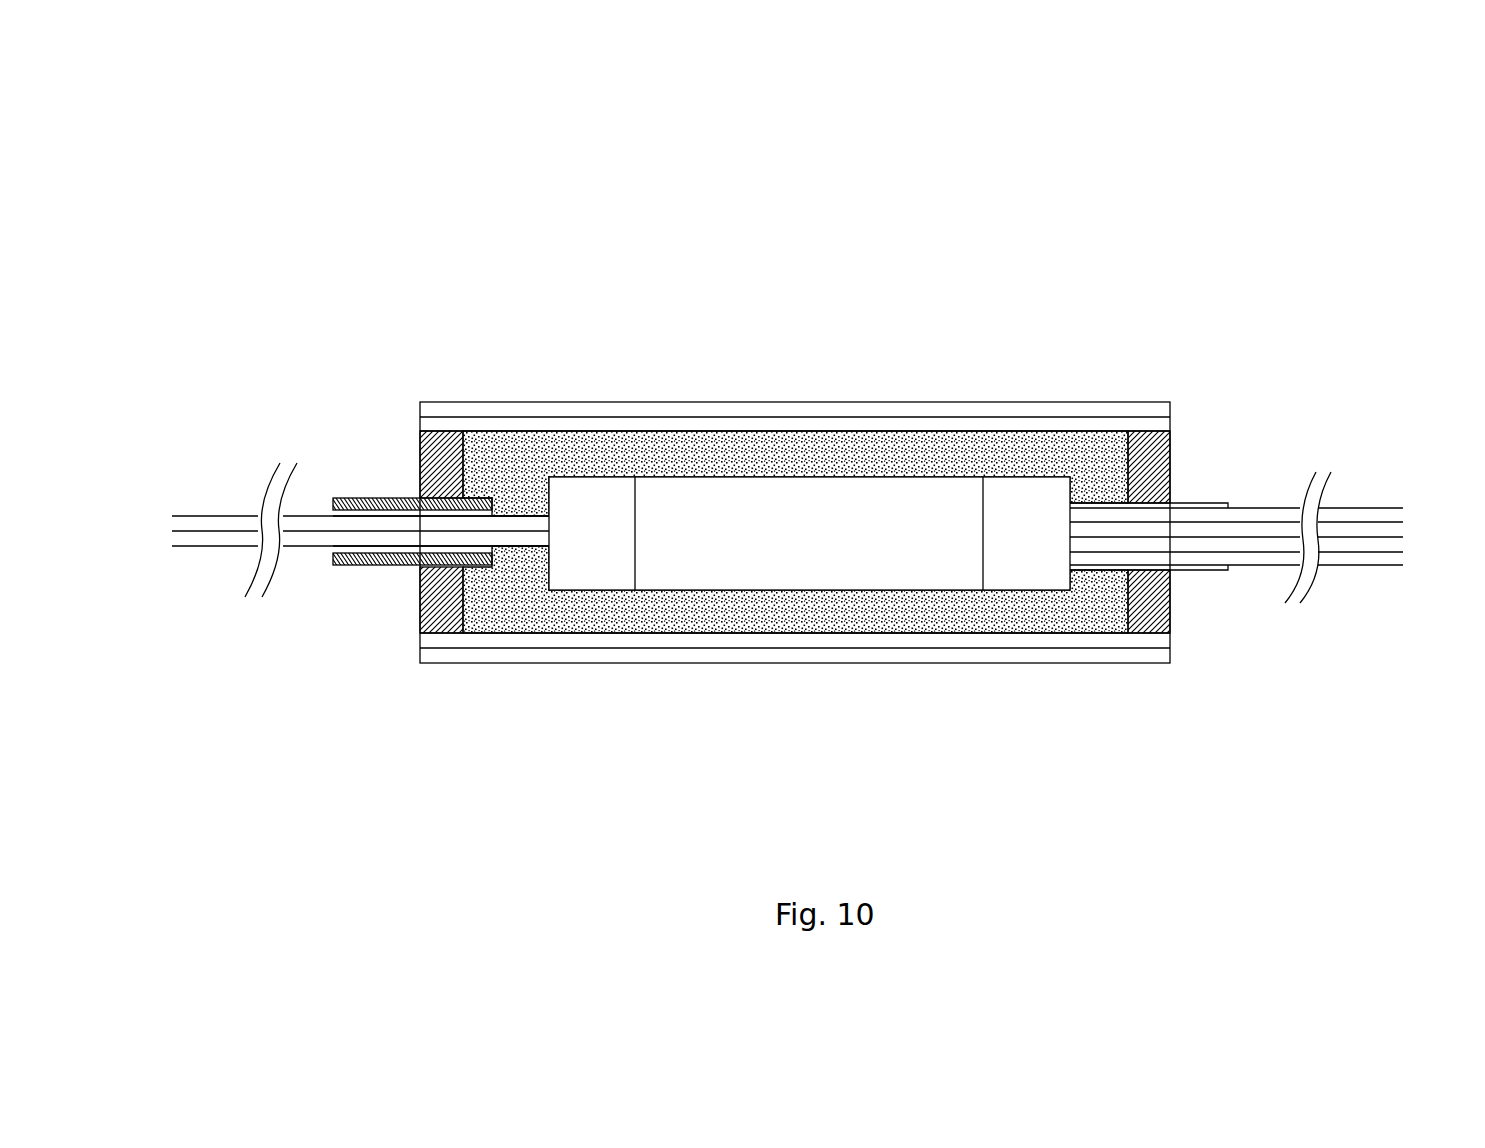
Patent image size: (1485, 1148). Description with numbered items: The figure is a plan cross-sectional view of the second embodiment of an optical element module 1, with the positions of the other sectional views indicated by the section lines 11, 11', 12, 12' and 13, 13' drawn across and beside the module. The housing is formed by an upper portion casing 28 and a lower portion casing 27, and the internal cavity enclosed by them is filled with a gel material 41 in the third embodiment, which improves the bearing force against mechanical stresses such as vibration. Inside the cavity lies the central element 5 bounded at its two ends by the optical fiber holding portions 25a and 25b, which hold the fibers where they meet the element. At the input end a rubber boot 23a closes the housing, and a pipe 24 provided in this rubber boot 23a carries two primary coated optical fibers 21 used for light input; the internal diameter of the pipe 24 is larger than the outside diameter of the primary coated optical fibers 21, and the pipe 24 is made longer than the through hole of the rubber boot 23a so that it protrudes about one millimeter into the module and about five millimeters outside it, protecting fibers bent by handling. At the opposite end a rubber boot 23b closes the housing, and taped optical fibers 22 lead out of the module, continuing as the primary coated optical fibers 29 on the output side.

The optical element module 1 is at (814, 418).
The optical fiber coupling core 5 is at (737, 505).
The section line 11 is at (139, 480).
The section line 11' is at (1448, 489).
The section line 12 is at (396, 365).
The section line 12' is at (389, 702).
The section line 13 is at (1204, 368).
The section line 13' is at (1206, 706).
The primary coated optical fibers 21 is at (217, 516).
The taped optical fibers 22 is at (1218, 503).
The rubber boot 23a is at (420, 608).
The rubber boot 23b is at (1170, 610).
The pipe 24 is at (333, 567).
The optical fiber holding portion 25a is at (593, 503).
The optical fiber holding portion 25b is at (998, 505).
The lower portion casing 27 is at (570, 420).
The upper portion casing 28 is at (463, 402).
The primary coated optical fibers 29 is at (1348, 507).
The gel material 41 is at (868, 447).